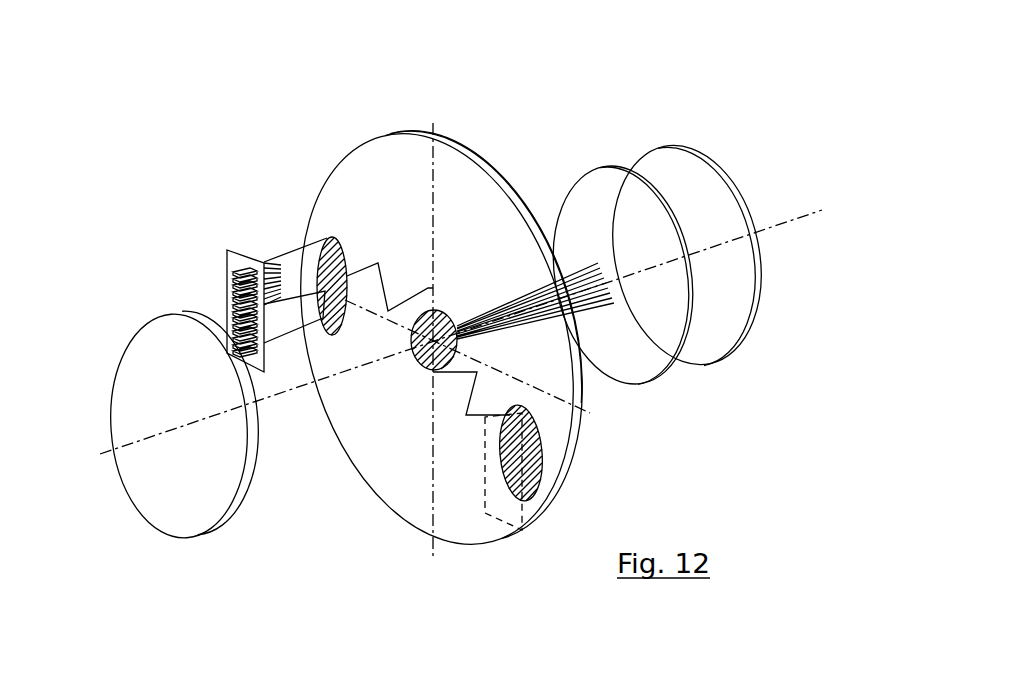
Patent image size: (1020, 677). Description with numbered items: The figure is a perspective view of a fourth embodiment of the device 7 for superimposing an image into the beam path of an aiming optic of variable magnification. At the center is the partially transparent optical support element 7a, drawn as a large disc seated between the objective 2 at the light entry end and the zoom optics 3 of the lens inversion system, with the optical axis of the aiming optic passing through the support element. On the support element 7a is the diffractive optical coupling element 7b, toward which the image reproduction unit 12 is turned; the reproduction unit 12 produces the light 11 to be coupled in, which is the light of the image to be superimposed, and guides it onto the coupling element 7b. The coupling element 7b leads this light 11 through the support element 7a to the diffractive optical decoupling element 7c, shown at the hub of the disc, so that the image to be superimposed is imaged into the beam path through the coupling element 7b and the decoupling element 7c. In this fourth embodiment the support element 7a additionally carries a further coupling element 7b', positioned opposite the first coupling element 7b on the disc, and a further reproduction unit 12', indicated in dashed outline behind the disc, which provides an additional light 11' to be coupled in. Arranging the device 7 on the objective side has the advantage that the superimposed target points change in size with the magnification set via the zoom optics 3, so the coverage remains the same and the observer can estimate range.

The objective 2 is at (152, 512).
The zoom optics 3 is at (659, 138).
The device for superimposing an image 7 is at (598, 460).
The optical support element 7a is at (380, 167).
The diffractive optical coupling element 7b is at (297, 192).
The further coupling element 7b' is at (640, 452).
The diffractive optical decoupling element 7c is at (412, 367).
The light to be coupled in 11 is at (480, 190).
The additional light to be coupled in 11' is at (413, 505).
The image reproduction unit 12 is at (189, 207).
The further reproduction unit 12' is at (474, 525).